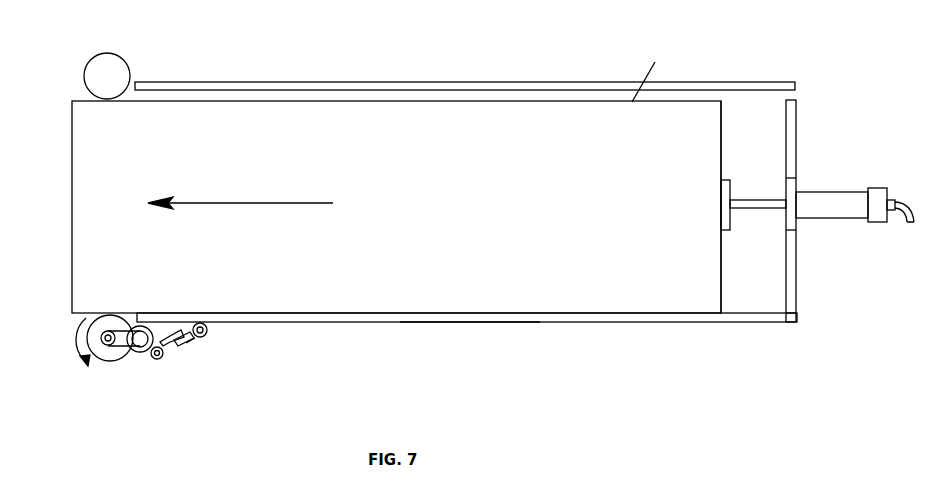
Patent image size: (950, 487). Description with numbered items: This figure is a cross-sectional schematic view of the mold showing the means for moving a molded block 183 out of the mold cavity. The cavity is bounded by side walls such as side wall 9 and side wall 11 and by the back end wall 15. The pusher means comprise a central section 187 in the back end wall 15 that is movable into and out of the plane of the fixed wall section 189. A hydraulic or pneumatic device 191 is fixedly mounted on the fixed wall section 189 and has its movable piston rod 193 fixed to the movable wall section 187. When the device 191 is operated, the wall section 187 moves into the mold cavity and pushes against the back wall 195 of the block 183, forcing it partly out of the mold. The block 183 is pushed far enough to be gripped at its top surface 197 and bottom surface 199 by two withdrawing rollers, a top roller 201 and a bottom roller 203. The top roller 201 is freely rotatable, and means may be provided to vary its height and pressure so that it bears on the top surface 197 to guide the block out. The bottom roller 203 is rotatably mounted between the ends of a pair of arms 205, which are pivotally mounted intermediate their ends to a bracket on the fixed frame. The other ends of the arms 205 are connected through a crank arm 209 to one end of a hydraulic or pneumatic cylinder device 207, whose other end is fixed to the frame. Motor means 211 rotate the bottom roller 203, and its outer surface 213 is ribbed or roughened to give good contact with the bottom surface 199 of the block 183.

The side wall 9 is at (428, 76).
The side wall 11 is at (471, 328).
The end wall 15 is at (808, 146).
The molded block 183 is at (650, 72).
The central section 187 is at (731, 192).
The fixed wall section 189 is at (798, 297).
The hydraulic or pneumatic device 191 is at (820, 219).
The piston rod 193 is at (743, 210).
The back wall 195 is at (722, 154).
The top surface 197 is at (303, 101).
The bottom surface 199 is at (299, 313).
The top roller 201 is at (137, 60).
The bottom roller 203 is at (107, 372).
The arms 205 is at (115, 327).
The hydraulic or pneumatic cylinder device 207 is at (187, 347).
The crank arm 209 is at (165, 345).
The motor means 211 is at (150, 328).
The outer surface 213 is at (80, 340).